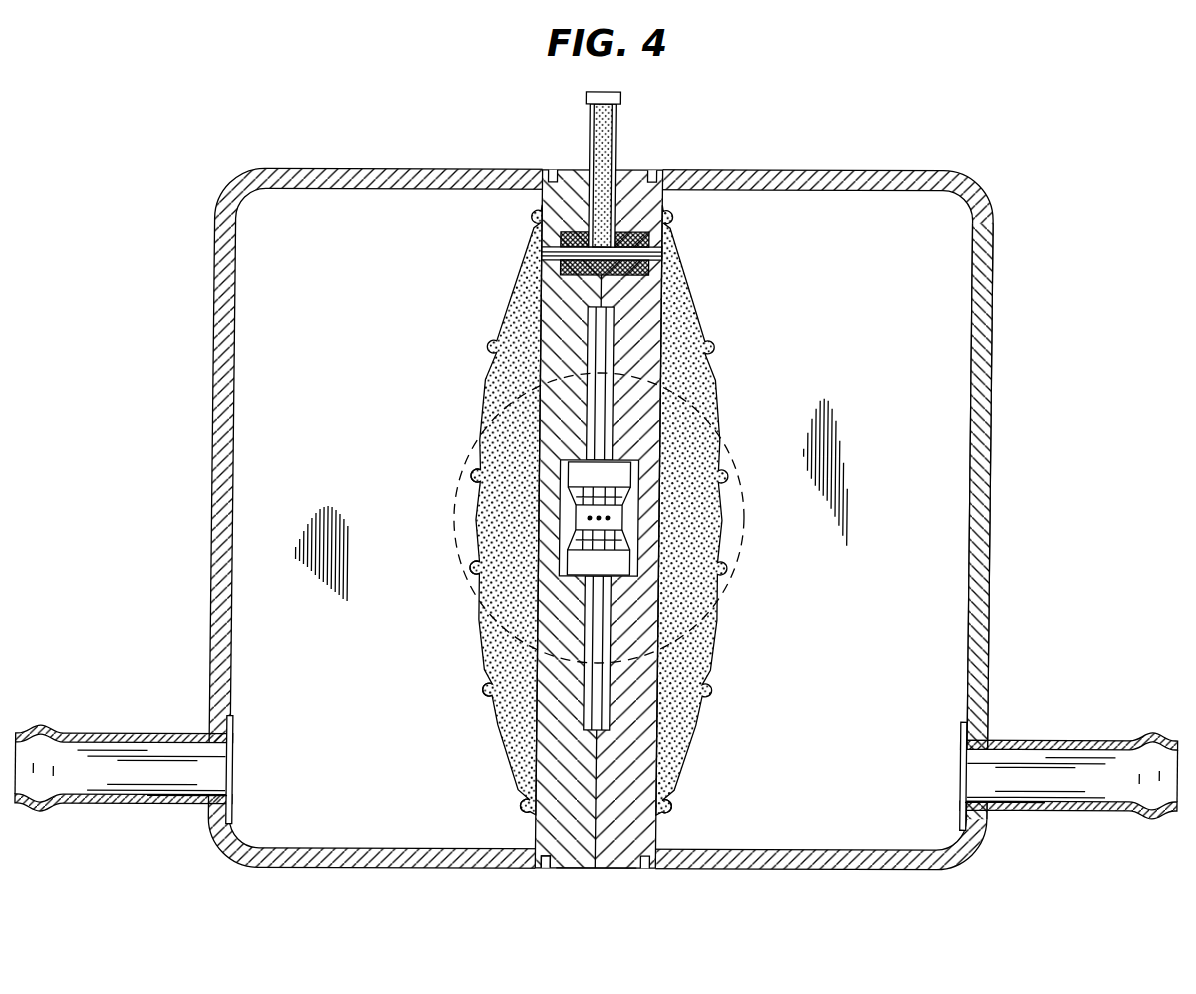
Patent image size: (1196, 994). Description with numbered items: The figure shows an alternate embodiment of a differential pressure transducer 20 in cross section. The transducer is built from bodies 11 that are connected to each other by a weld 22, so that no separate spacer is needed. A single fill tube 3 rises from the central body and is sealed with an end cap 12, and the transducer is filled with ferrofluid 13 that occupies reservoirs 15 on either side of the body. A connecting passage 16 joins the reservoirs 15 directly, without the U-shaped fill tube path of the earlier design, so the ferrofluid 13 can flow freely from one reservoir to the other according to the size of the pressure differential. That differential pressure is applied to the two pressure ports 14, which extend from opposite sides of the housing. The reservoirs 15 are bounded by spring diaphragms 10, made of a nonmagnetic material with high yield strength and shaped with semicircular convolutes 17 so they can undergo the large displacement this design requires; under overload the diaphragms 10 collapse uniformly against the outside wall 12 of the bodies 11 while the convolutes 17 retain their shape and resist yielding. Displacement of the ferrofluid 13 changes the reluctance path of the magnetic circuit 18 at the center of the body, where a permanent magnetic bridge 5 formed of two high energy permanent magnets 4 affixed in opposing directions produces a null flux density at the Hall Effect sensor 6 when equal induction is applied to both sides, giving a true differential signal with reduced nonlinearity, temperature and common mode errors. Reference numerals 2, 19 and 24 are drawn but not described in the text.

The sensor body 2 is at (543, 252).
The fill tube 3 is at (592, 142).
The high energy permanent magnets 4 is at (646, 575).
The permanent magnetic bridge 5 is at (558, 525).
The Hall Effect sensor 6 is at (641, 496).
The spring diaphragms 10 is at (492, 377).
The bodies 11 is at (528, 808).
The end cap 12 is at (622, 101).
The ferrofluid 13 is at (720, 504).
The pressure ports 14 is at (115, 733).
The reservoirs 15 is at (479, 485).
The connecting passage 16 is at (663, 257).
The semicircular convolutes 17 is at (491, 697).
The magnetic circuit 18 is at (481, 598).
The slot 19 is at (537, 869).
The differential pressure transducer 20 is at (1020, 292).
The weld 22 is at (603, 869).
The cavity 24 is at (662, 570).